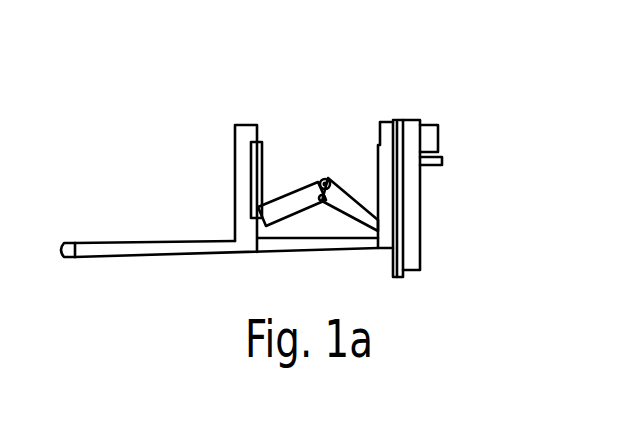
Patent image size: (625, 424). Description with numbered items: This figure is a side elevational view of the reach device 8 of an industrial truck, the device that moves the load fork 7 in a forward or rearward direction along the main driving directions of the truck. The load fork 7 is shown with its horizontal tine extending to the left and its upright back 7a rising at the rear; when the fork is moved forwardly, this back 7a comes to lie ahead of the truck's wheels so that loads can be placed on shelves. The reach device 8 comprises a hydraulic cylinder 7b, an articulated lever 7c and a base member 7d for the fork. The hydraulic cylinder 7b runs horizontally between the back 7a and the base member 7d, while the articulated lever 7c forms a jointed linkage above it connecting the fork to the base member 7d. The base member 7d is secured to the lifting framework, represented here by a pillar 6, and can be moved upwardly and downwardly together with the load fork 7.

The reach device 8 is at (356, 108).
The load fork 7 is at (162, 242).
The back of the load fork 7a is at (242, 205).
The hydraulic cylinder 7b is at (337, 207).
The articulated lever 7c is at (328, 182).
The base member 7d is at (382, 240).
The pillar 6 is at (422, 258).